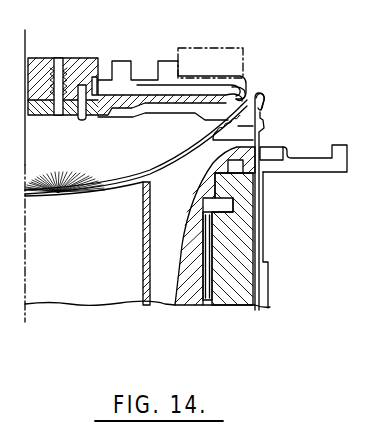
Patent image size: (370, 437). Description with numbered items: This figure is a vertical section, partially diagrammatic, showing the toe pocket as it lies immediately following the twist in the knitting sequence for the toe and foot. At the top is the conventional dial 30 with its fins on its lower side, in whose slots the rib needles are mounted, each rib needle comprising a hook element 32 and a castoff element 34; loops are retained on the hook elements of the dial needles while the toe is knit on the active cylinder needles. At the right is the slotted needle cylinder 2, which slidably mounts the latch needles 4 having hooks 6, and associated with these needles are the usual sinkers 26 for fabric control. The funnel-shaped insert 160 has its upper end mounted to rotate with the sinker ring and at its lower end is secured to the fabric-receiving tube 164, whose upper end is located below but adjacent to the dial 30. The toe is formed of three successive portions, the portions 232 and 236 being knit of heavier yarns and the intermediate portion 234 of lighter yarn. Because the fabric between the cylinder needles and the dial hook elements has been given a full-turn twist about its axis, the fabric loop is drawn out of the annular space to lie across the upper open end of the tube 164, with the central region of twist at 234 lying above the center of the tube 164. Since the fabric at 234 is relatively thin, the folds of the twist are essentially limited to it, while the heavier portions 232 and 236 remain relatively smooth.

The needle cylinder 2 is at (249, 282).
The latch needles 4 is at (260, 237).
The hooks 6 is at (263, 102).
The sinkers 26 is at (284, 146).
The dial 30 is at (107, 117).
The hook elements 32 is at (214, 92).
The castoff elements 34 is at (243, 82).
The funnel-shaped insert 160 is at (178, 252).
The fabric-receiving tube 164 is at (143, 247).
The first toe portion 232 is at (172, 158).
The intermediate toe portion 234 is at (61, 204).
The third toe portion 236 is at (180, 161).